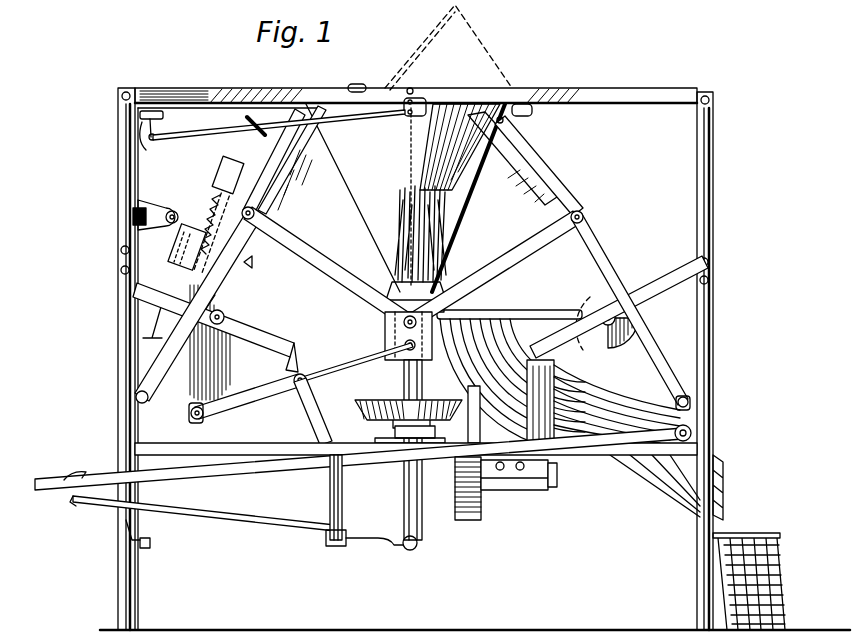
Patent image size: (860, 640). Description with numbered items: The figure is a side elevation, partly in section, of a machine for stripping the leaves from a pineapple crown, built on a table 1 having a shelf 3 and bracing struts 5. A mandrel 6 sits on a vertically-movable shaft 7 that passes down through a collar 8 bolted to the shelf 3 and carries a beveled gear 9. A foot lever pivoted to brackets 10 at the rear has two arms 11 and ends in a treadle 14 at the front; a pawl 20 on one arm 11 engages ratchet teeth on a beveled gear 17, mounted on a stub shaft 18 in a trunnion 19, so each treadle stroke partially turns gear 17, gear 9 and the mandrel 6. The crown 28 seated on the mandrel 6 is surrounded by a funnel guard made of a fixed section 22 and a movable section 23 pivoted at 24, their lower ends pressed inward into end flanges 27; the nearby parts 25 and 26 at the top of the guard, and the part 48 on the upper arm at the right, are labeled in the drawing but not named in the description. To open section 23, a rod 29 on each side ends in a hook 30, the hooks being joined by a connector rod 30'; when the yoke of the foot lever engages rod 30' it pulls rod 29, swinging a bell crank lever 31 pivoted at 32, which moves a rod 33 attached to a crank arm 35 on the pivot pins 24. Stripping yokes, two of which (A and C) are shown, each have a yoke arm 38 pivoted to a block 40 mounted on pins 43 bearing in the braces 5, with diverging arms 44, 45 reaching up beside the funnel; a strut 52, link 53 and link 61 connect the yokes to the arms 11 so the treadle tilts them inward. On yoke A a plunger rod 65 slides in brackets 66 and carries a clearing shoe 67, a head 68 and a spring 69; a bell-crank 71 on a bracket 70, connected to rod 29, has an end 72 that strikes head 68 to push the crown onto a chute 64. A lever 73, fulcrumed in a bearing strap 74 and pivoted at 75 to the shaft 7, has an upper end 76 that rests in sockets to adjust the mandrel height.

The table 1 is at (655, 98).
The shelf 3 is at (330, 443).
The bracing strut 5 is at (265, 332).
The mandrel 6 is at (386, 330).
The vertically-movable shaft 7 is at (422, 492).
The collar 8 is at (395, 429).
The beveled gear 9 is at (445, 408).
The bracket 10 is at (700, 432).
The arm of foot lever 11 is at (239, 470).
The treadle 14 is at (52, 476).
The beveled gear 17 is at (481, 506).
The stub shaft 18 is at (557, 472).
The trunnion 19 is at (522, 480).
The pawl 20 is at (480, 408).
The fixed funnel section 22 is at (356, 168).
The movable funnel section 23 is at (466, 170).
The pivot pin 24 is at (410, 87).
The bracket 25 is at (355, 84).
The brush holder plate 26 is at (455, 118).
The end flange 27 is at (430, 232).
The crown 28 is at (440, 262).
The rod 29 is at (150, 504).
The hook 30 is at (166, 547).
The connector rod 30' is at (165, 530).
The bell crank lever 31 is at (154, 140).
The pivot 32 is at (163, 116).
The rod 33 is at (198, 136).
The crank arm 35 is at (404, 109).
The yoke arm 38 is at (228, 276).
The block 40 is at (598, 312).
The pin 43 is at (610, 328).
The diverging arm 44 is at (318, 162).
The diverging arm 45 is at (563, 126).
The hub 48 is at (530, 104).
The strut 52 is at (224, 368).
The link 53 is at (356, 366).
The link 61 is at (315, 420).
The chute 64 is at (500, 318).
The plunger rod 65 is at (152, 313).
The bracket 66 is at (230, 160).
The clearing shoe 67 is at (263, 119).
The head 68 is at (186, 342).
The spring 69 is at (216, 198).
The bracket 70 is at (147, 226).
The bell-crank 71 is at (153, 203).
The end of bell-crank 72 is at (184, 247).
The lever 73 is at (305, 532).
The bearing strap 74 is at (343, 500).
The pivotal connection 75 is at (418, 544).
The upper end of lever 76 is at (74, 504).
The yoke A is at (255, 263).
The yoke C is at (584, 211).